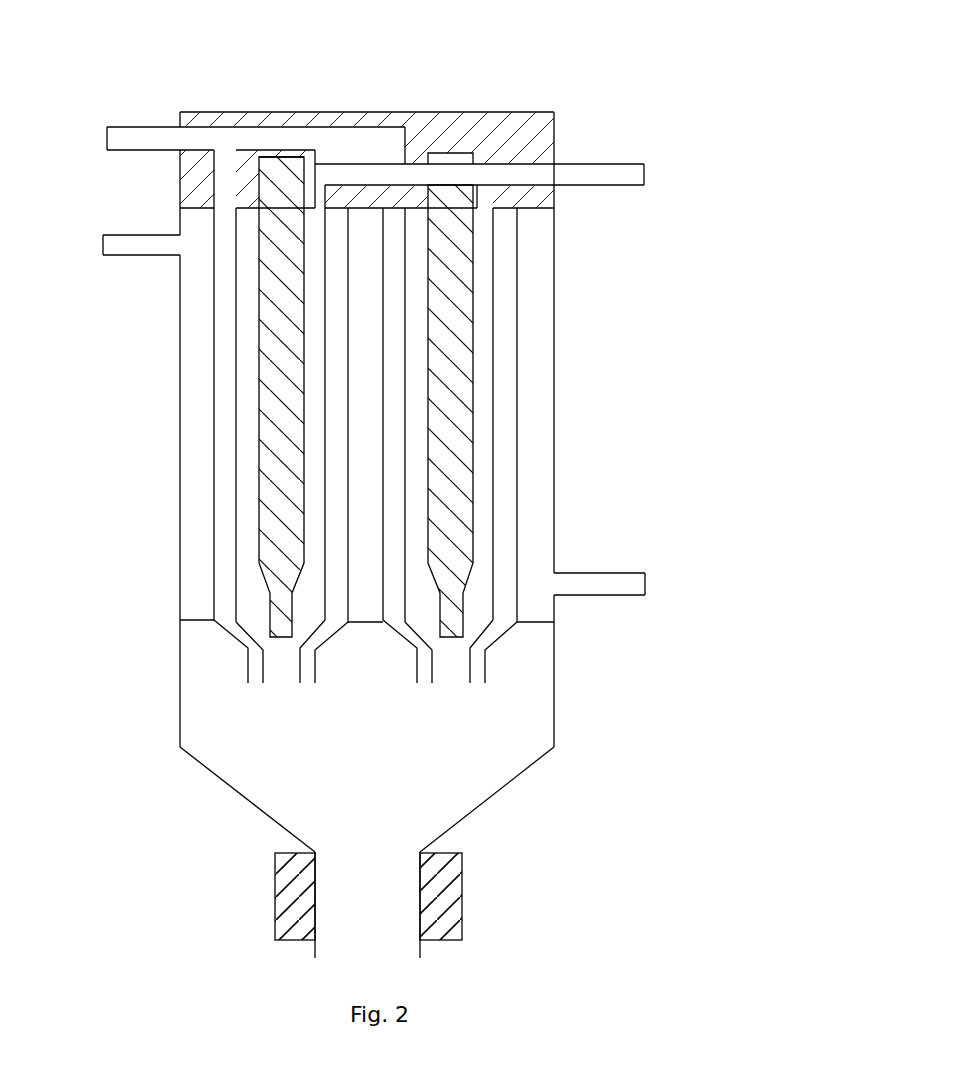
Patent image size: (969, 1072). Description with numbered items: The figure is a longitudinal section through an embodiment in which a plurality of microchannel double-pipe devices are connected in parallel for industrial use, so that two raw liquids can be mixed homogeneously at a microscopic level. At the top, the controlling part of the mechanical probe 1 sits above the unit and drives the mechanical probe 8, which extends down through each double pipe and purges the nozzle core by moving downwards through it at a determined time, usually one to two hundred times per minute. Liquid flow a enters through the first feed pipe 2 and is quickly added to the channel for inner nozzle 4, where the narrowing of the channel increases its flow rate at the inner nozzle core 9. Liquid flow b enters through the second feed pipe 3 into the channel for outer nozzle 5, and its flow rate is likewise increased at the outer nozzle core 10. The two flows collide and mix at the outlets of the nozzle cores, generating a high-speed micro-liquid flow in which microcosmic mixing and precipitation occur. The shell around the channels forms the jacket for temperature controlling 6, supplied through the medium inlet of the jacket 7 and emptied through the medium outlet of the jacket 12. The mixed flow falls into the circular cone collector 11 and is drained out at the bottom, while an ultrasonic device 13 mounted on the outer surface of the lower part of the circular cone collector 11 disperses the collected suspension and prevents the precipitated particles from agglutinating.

The controlling part of the mechanical probe 1 is at (375, 102).
The first feed pipe 2 is at (486, 198).
The second feed pipe 3 is at (122, 138).
The channel for inner nozzle 4 is at (248, 268).
The channel for outer nozzle 5 is at (340, 352).
The jacket for temperature controlling 6 is at (542, 548).
The medium inlet of the jacket 7 is at (606, 610).
The mechanical probe 8 is at (280, 425).
The inner nozzle core 9 is at (280, 658).
The outer nozzle core 10 is at (243, 656).
The circular cone collector 11 is at (425, 803).
The medium outlet of the jacket 12 is at (118, 245).
The ultrasonic device 13 is at (433, 865).